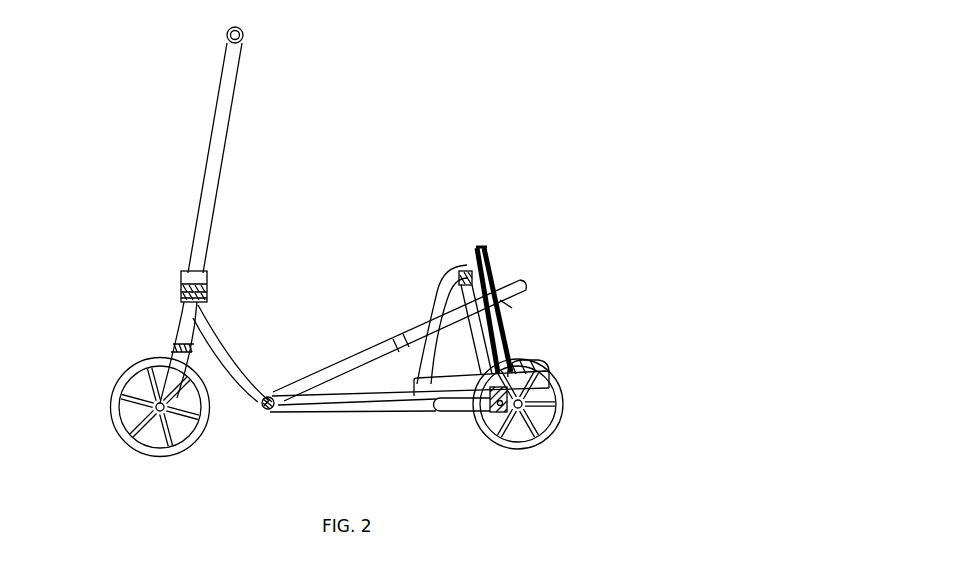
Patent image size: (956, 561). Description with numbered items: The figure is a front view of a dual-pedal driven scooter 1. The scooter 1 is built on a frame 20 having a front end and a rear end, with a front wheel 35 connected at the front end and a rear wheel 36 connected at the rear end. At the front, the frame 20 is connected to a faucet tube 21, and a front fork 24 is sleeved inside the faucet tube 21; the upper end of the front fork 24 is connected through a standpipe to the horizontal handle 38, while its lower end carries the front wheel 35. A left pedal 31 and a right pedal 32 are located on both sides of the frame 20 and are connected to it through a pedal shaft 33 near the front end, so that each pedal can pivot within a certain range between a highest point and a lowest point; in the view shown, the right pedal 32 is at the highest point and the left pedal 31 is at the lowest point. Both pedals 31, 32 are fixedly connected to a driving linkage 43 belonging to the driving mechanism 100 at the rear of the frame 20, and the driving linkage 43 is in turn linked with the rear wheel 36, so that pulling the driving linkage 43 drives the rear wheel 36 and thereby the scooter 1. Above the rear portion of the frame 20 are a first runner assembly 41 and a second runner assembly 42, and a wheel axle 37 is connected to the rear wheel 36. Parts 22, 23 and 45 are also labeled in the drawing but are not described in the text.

The scooter 1 is at (525, 108).
The driving mechanism 100 is at (508, 264).
The frame 20 is at (338, 413).
The faucet tube 21 is at (172, 357).
The upright tube 22 is at (455, 272).
The rear deck portion 23 is at (463, 421).
The front fork 24 is at (163, 368).
The left pedal 31 is at (413, 383).
The right pedal 32 is at (415, 333).
The pedal shaft 33 is at (268, 410).
The front wheel 35 is at (110, 392).
The rear wheel 36 is at (551, 373).
The wheel axle 37 is at (200, 182).
The horizontal handle 38 is at (227, 38).
The first runner assembly 41 is at (460, 268).
The second runner assembly 42 is at (485, 246).
The driving linkage 43 is at (517, 338).
The bar end 45 is at (512, 308).